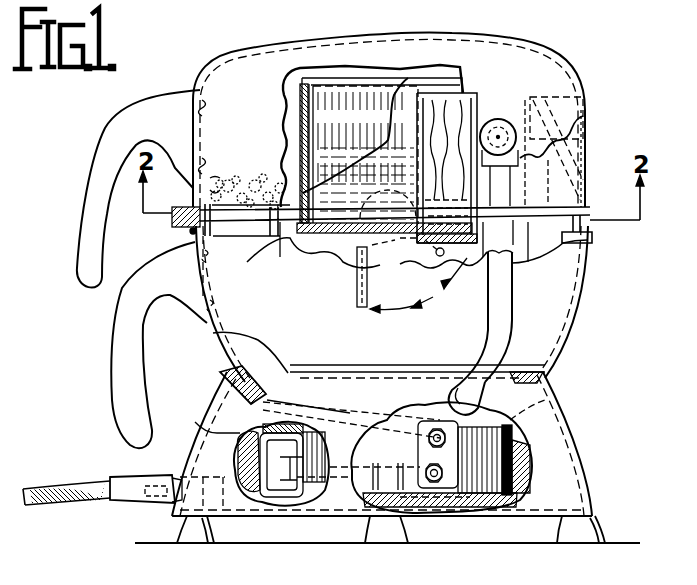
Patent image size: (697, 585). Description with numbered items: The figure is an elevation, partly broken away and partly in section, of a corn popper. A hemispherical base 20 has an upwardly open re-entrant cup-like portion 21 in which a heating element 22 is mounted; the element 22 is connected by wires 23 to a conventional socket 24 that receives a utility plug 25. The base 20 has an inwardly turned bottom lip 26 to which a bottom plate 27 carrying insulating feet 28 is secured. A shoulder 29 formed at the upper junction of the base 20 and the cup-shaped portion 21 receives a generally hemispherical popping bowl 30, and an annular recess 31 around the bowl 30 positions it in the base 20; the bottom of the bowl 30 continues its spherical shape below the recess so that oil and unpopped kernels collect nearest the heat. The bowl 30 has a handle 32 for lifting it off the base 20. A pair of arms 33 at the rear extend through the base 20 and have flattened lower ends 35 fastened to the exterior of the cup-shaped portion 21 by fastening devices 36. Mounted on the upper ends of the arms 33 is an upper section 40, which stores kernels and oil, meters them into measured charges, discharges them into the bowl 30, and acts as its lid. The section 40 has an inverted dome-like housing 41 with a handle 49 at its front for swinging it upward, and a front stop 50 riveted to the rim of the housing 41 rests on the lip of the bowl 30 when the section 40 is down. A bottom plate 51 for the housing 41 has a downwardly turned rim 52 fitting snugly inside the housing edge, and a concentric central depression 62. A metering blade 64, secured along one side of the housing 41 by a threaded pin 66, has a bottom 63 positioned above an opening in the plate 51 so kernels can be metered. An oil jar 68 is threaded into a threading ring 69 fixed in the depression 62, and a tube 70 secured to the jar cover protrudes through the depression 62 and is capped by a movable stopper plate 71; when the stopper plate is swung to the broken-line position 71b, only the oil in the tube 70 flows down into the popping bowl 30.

The hemispherical base 20 is at (592, 465).
The re-entrant cup-like portion 21 is at (516, 420).
The heating element 22 is at (300, 475).
The wires 23 is at (203, 433).
The socket 24 is at (178, 480).
The utility plug 25 is at (133, 478).
The bottom lip 26 is at (590, 506).
The bottom plate 27 is at (408, 543).
The insulating feet 28 is at (605, 533).
The shoulder 29 is at (560, 380).
The popping bowl 30 is at (576, 322).
The annular recess 31 is at (561, 353).
The handle 32 is at (147, 360).
The arms 33 is at (510, 300).
The flattened lower ends 35 is at (465, 477).
The fastening devices 36 is at (463, 470).
The upper section 40 is at (595, 117).
The inverted dome-like housing 41 is at (272, 44).
The handle 49 is at (100, 163).
The front stop 50 is at (172, 222).
The bottom plate 51 is at (588, 234).
The downwardly turned rim 52 is at (193, 200).
The concentric depression 62 is at (336, 230).
The bottom of metering blade 63 is at (548, 200).
The metering blade 64 is at (584, 150).
The threaded pin 66 is at (587, 129).
The oil jar 68 is at (373, 80).
The threading ring 69 is at (290, 238).
The tube 70 is at (455, 105).
The stopper plate 71 is at (369, 258).
The stopper plate (open position) 71b is at (357, 295).